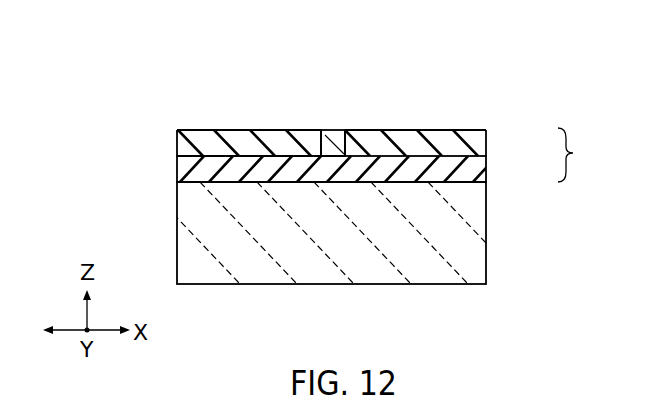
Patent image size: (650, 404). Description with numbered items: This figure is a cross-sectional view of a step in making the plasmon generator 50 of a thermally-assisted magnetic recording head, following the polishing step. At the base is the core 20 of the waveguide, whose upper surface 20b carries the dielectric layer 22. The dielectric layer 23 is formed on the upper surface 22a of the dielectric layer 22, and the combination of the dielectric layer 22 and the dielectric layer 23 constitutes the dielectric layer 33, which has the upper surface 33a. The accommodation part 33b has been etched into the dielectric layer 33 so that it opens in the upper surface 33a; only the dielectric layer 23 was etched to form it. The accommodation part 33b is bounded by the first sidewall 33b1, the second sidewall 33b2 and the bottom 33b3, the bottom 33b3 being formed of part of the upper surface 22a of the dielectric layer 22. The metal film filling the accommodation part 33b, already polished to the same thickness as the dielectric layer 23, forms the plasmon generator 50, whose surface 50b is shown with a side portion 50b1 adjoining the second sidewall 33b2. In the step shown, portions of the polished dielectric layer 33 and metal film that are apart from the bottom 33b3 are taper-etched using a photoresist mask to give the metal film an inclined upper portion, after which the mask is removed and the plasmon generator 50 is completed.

The core 20 is at (487, 217).
The upper surface of core 20b is at (188, 182).
The dielectric layer 22 is at (487, 168).
The upper surface of dielectric layer 22a is at (188, 156).
The dielectric layer 23 is at (487, 141).
The dielectric layer 33 is at (580, 155).
The upper surface of dielectric layer 33a is at (197, 129).
The accommodation part 33b is at (324, 130).
The first sidewall of accommodation part 33b1 is at (265, 129).
The second sidewall of accommodation part 33b2 is at (390, 129).
The bottom of accommodation part 33b3 is at (331, 156).
The plasmon generator 50 is at (331, 129).
The surface of filling member 50b is at (361, 89).
The side surface of filling member 50b1 is at (338, 129).